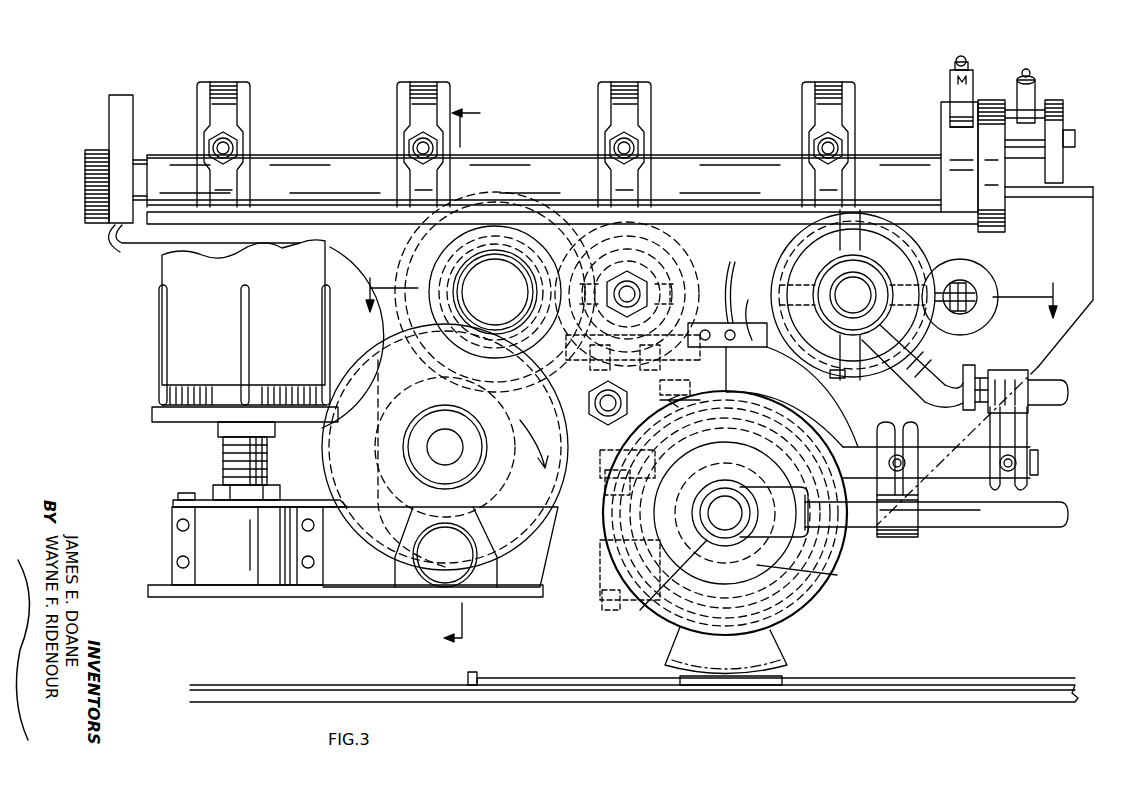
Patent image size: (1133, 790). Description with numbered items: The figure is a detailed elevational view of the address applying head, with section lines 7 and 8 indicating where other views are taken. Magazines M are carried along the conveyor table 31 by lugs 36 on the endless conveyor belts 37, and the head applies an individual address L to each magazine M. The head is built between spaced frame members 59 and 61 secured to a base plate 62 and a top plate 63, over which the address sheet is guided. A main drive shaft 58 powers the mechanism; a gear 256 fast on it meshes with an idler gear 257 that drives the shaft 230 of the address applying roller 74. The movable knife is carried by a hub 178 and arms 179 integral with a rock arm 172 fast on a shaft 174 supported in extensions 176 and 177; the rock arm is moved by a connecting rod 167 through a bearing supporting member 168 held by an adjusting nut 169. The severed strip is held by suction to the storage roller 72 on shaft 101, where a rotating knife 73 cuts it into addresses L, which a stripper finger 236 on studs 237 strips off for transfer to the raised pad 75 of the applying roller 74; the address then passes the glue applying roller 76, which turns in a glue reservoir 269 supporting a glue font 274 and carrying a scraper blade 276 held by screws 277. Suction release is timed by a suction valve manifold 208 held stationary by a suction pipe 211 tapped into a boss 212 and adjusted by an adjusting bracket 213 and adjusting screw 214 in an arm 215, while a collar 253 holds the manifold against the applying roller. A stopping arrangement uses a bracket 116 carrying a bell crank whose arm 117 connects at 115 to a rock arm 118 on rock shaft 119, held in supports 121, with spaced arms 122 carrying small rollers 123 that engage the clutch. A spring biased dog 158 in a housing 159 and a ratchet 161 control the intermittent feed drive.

The section line 7- 7 is at (710, 289).
The section line 8- 8 is at (472, 377).
The conveyor table 31 is at (958, 698).
The lugs 36 is at (475, 672).
The endless conveyor belts 37 is at (910, 680).
The main drive shaft 58 is at (507, 294).
The frame member 59 is at (1060, 330).
The frame member 61 is at (1093, 232).
The base plate 62 is at (495, 590).
The top plate 63 is at (1088, 187).
The storage roller 72 is at (925, 252).
The rotating knife 73 is at (990, 270).
The address applying roller 74 is at (823, 440).
The raised pad 75 is at (905, 378).
The glue applying roller 76 is at (555, 480).
The shaft 101 is at (857, 280).
The connection 115 is at (685, 444).
The bracket 116 is at (592, 572).
The arm 117 is at (722, 468).
The rock arm 118 is at (610, 440).
The rock shaft 119 is at (627, 403).
The supports 121 is at (672, 382).
The spaced arms 122 is at (665, 296).
The small roller 123 is at (645, 268).
The spring biased dog 158 is at (1026, 70).
The housing 159 is at (1035, 95).
The ratchet 161 is at (84, 180).
The connecting rod 167 is at (960, 56).
The bearing supporting member 168 is at (950, 95).
The adjusting nut 169 is at (967, 70).
The rock arm 172 is at (941, 140).
The shaft 174 is at (140, 150).
The extension 176 is at (1000, 178).
The extension 177 is at (120, 232).
The hub 178 is at (745, 155).
The arms 179 is at (397, 128).
The suction valve manifold 208 is at (795, 600).
The suction pipe 211 is at (1055, 395).
The boss 212 is at (835, 575).
The adjusting bracket 213 is at (912, 440).
The adjusting screw 214 is at (903, 470).
The arm 215 is at (862, 425).
The shaft 230 is at (728, 525).
The stripper finger 236 is at (728, 312).
The studs 237 is at (737, 282).
The collar 253 is at (668, 605).
The gear 256 is at (445, 408).
The idler gear 257 is at (445, 447).
The glue reservoir 269 is at (345, 585).
The glue font 274 is at (180, 348).
The scraper blade 276 is at (282, 498).
The screws 277 is at (180, 490).
The magazine M is at (555, 680).
The address L is at (815, 680).